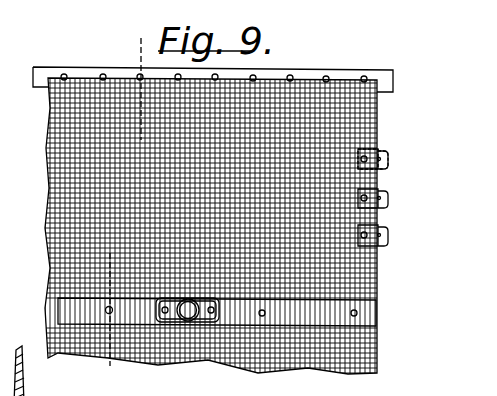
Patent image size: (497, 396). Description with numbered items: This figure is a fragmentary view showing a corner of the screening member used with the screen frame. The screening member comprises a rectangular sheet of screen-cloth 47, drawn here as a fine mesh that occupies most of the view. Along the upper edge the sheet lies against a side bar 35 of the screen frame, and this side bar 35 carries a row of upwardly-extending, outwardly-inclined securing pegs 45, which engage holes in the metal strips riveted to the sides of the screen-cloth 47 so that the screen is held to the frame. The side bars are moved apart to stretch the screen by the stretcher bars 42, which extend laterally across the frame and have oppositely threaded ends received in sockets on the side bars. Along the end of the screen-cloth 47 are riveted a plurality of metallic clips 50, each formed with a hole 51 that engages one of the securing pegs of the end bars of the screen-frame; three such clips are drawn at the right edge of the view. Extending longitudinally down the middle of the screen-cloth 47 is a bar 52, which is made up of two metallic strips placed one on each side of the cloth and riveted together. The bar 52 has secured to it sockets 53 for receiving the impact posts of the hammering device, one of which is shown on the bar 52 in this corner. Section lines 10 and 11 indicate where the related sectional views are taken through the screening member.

The section line 10 is at (133, 32).
The section line 11 is at (102, 248).
The side bar 35 is at (331, 68).
The stretcher bar 42 is at (107, 134).
The securing peg 45 is at (57, 65).
The sheet of screen-cloth 47 is at (371, 106).
The metallic clip 50 is at (377, 140).
The hole 51 is at (374, 227).
The bar 52 is at (217, 312).
The socket 53 is at (148, 302).